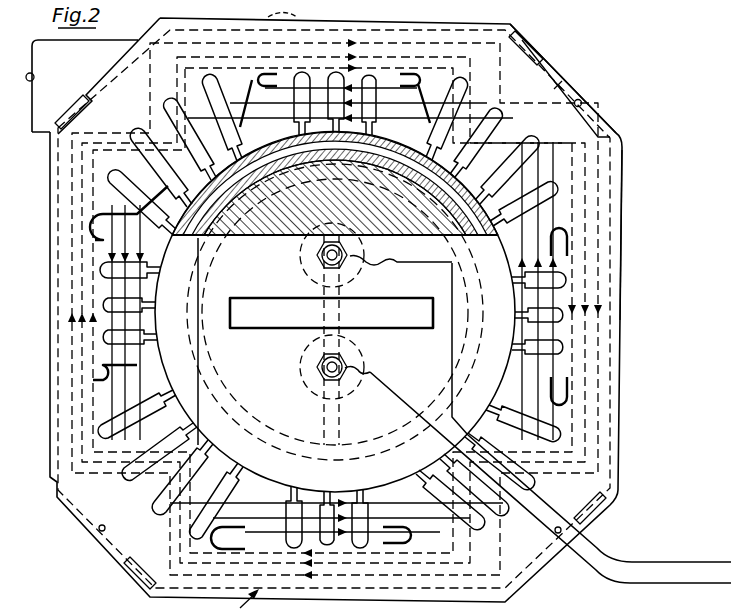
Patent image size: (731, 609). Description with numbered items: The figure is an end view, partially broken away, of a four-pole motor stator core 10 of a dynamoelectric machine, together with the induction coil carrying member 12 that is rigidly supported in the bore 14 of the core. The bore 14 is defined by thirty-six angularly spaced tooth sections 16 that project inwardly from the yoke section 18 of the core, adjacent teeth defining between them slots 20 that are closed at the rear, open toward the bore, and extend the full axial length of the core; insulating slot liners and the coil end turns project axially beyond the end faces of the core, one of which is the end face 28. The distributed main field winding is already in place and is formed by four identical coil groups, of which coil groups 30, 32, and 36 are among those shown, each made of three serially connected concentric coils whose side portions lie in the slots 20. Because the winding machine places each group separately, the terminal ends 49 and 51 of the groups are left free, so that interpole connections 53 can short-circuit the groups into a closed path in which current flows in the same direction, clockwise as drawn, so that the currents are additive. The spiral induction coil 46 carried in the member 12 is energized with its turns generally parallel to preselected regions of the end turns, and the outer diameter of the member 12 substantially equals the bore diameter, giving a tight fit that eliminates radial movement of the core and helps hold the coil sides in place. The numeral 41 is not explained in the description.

The stator core 10 is at (630, 193).
The induction coil carrying member 12 is at (284, 348).
The bore 14 is at (286, 447).
The tooth sections 16 is at (147, 290).
The yoke section 18 is at (566, 82).
The slots 20 is at (168, 97).
The end face 28 is at (615, 166).
The coil group 30 is at (525, 48).
The coil group 32 is at (78, 284).
The coil group 36 is at (609, 276).
The outlet pipe 41 is at (550, 490).
The spiral induction coil 46 is at (250, 195).
The terminal end 49 is at (655, 241).
The terminal end 51 is at (186, 42).
The interpole connections 53 is at (36, 77).